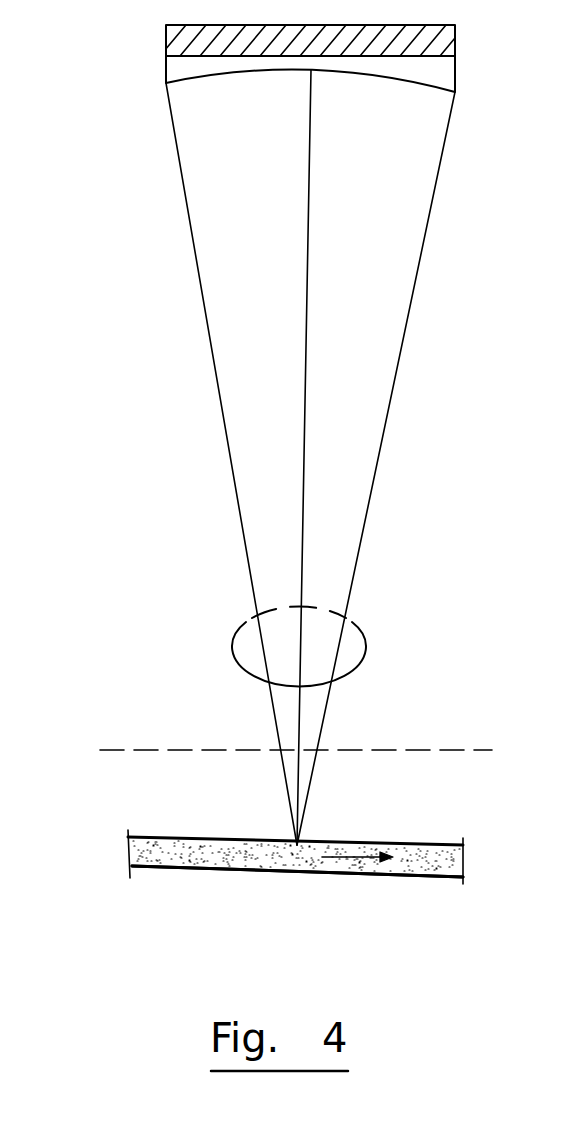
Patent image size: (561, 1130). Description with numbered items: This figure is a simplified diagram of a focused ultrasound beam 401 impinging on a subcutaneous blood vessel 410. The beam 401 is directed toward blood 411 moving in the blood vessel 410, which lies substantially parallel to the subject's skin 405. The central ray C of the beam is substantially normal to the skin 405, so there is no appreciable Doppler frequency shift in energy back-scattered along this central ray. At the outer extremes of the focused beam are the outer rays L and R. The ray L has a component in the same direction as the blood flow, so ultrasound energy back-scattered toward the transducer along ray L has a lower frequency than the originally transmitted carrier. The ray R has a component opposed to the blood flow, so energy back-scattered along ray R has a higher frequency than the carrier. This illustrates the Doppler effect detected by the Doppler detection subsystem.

The left outer ray L is at (200, 311).
The right outer ray R is at (412, 305).
The central ray C is at (303, 540).
The focused ultrasound beam 401 is at (233, 644).
The skin 405 is at (118, 752).
The blood vessel 410 is at (160, 866).
The blood 411 is at (233, 864).